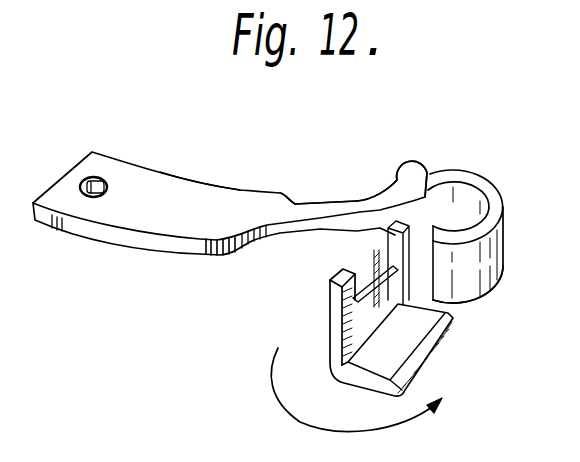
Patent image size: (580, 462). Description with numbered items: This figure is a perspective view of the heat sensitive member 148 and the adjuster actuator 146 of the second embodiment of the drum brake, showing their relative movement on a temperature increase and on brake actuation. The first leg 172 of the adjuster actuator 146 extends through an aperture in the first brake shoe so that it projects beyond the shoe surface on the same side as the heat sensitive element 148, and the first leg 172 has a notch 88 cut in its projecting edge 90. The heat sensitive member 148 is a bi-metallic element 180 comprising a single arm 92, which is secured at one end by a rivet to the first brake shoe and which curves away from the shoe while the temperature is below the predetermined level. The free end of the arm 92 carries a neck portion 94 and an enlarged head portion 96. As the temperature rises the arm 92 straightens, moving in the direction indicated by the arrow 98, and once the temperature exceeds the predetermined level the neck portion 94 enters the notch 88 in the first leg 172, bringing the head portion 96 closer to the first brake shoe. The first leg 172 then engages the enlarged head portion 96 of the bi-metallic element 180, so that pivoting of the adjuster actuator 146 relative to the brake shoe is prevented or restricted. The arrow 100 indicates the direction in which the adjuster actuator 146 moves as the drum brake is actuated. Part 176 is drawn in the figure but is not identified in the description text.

The notch 88 is at (357, 263).
The projecting edge 90 is at (328, 254).
The arm 92 is at (197, 222).
The neck portion 94 is at (358, 196).
The enlarged head portion 96 is at (395, 177).
The arrow 98 is at (329, 161).
The arrow 100 is at (272, 392).
The adjuster actuator 146 is at (442, 310).
The heat sensitive member 148 is at (157, 165).
The first leg 172 is at (449, 338).
The C-shaped ring 176 is at (463, 172).
The bi-metallic element 180 is at (203, 185).